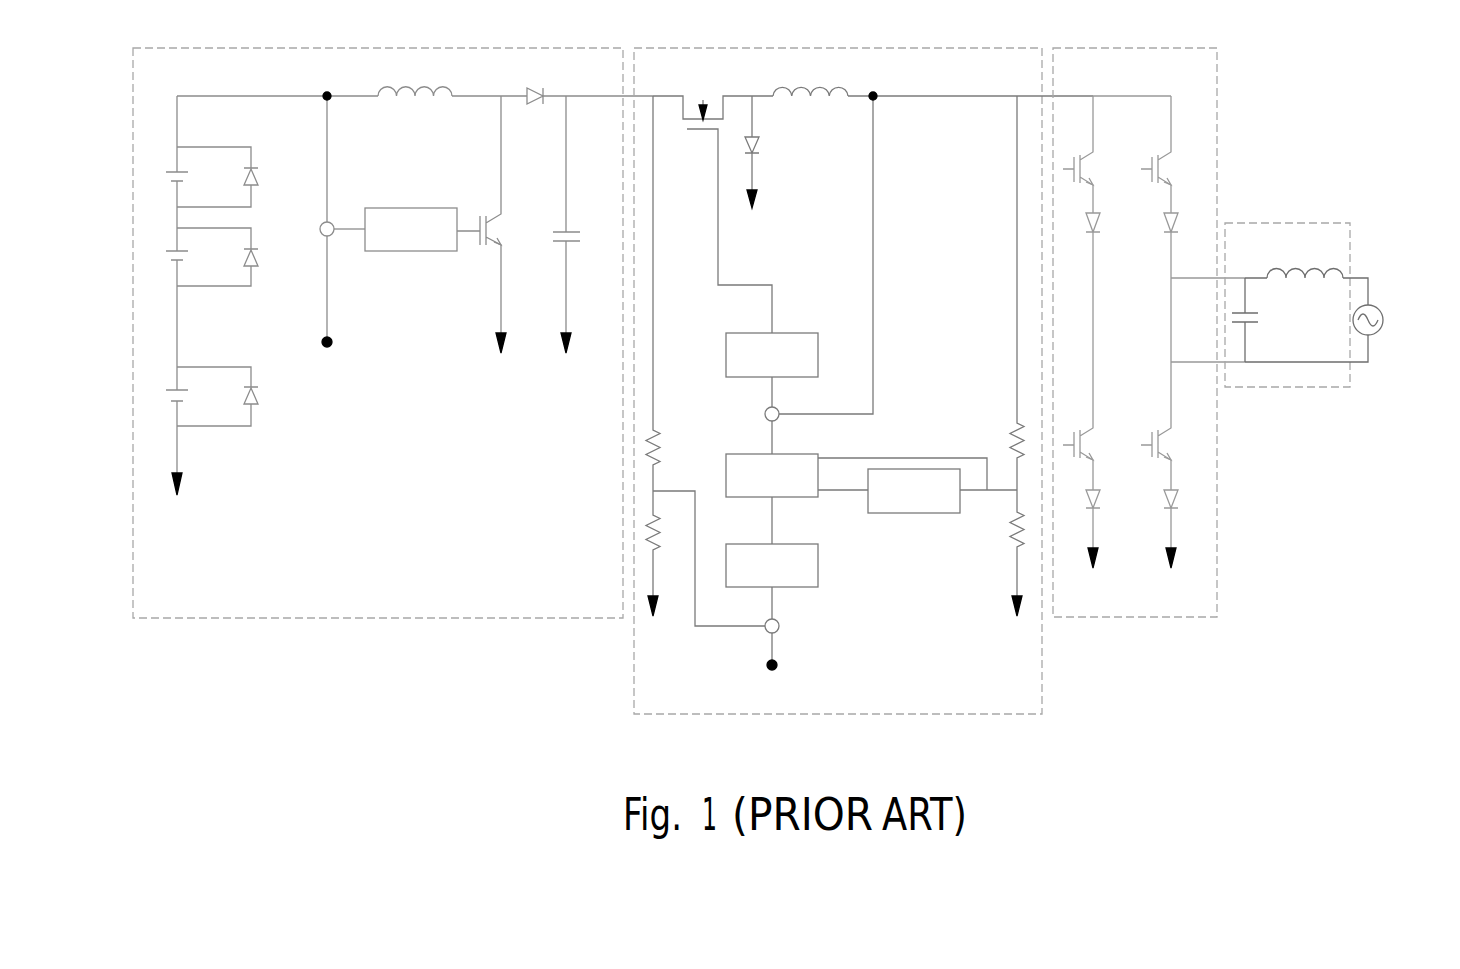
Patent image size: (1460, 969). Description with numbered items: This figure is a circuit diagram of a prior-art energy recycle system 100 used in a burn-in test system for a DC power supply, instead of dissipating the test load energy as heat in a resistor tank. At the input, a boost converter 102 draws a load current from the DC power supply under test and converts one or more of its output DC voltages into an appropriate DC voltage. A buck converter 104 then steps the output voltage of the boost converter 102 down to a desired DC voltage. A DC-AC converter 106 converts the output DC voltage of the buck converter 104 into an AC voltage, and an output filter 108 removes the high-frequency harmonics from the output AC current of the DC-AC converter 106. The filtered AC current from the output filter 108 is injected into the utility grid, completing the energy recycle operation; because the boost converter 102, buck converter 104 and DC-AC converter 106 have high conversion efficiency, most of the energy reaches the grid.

The energy recycle system 100 is at (1365, 53).
The boost converter 102 is at (377, 618).
The buck converter 104 is at (948, 714).
The DC-AC converter 106 is at (1217, 110).
The output filter 108 is at (1287, 222).